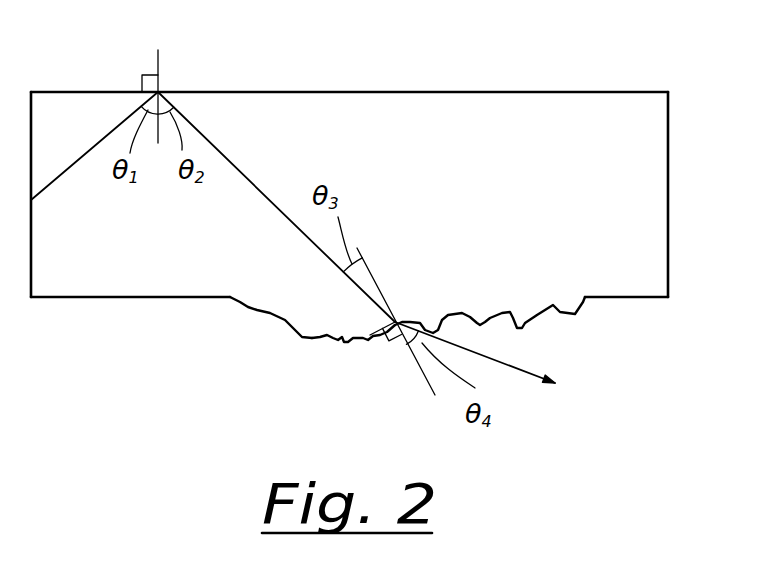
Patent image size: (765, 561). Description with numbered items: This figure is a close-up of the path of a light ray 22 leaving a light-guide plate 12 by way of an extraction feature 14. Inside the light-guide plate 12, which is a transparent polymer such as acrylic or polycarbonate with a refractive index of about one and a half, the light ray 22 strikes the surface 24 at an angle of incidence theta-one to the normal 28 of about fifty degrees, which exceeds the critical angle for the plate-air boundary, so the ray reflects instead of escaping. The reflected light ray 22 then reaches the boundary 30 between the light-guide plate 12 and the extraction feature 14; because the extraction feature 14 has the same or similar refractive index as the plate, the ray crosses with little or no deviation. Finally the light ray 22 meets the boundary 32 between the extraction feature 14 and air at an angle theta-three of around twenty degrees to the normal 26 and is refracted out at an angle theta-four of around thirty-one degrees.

The light-guide plate 12 is at (349, 201).
The extraction feature 14 is at (402, 363).
The light ray 22 is at (192, 120).
The surface 24 is at (238, 92).
The normal 26 is at (380, 287).
The normal 28 is at (158, 68).
The boundary 30 is at (127, 297).
The boundary 32 is at (328, 338).